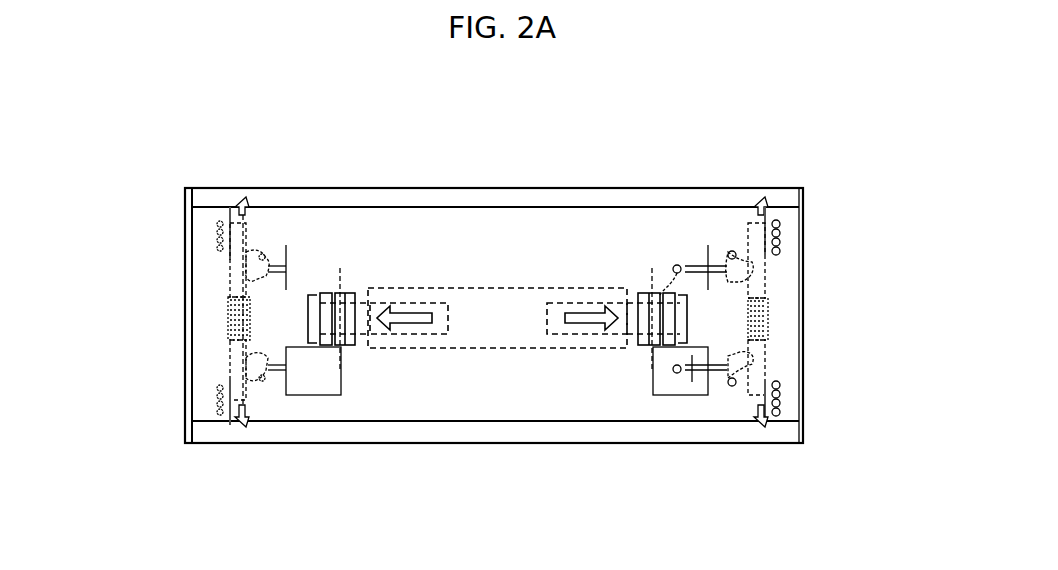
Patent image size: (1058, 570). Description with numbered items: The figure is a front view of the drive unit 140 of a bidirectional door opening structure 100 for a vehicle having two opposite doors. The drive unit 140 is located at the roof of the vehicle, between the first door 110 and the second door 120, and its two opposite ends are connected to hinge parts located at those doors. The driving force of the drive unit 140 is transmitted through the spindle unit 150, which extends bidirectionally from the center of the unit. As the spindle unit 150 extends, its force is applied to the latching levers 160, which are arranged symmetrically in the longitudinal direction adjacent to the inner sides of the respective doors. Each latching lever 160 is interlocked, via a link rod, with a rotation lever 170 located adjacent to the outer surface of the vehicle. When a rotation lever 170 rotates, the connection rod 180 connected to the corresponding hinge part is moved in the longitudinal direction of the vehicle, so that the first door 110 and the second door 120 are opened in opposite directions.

The bidirectional door opening structure 100 is at (185, 243).
The first door 110 is at (487, 443).
The second door 120 is at (483, 188).
The drive unit 140 is at (803, 232).
The spindle unit 150 is at (425, 348).
The latching lever 160 is at (667, 352).
The rotation lever 170 is at (237, 373).
The connection rod 180 is at (757, 395).